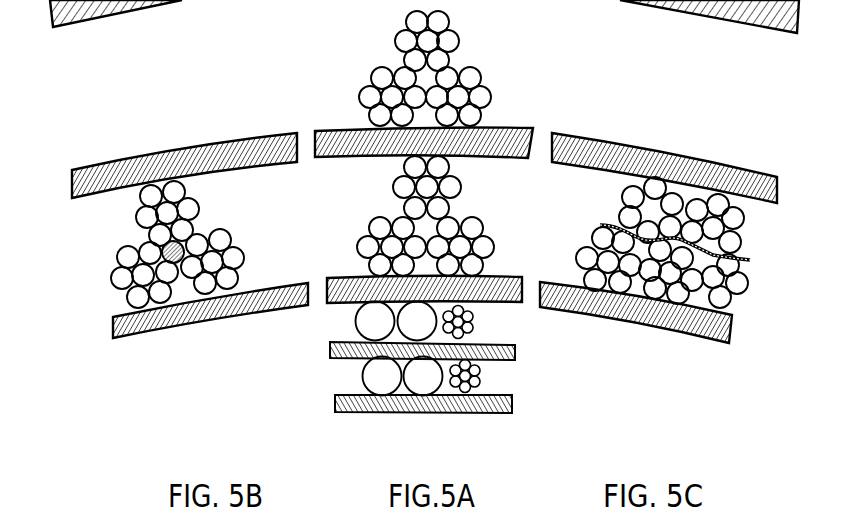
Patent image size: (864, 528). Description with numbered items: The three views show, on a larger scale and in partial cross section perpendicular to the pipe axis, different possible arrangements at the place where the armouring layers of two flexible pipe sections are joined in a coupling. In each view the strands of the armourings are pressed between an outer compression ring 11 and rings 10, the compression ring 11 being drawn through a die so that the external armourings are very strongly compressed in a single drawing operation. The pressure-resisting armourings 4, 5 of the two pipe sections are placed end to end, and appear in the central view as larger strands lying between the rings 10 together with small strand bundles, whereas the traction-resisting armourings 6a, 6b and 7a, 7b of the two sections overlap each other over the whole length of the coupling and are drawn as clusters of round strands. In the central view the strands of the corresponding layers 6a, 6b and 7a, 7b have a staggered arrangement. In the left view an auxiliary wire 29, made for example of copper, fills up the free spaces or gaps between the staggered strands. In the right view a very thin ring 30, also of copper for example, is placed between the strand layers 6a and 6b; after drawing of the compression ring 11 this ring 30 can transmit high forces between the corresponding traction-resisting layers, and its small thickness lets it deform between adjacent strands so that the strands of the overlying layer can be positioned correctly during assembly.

In FIG. 5A, the pressure resisting armouring 4 is at (464, 390).
In FIG. 5A, the pressure resisting armouring 5 is at (463, 330).
In FIG. 5B, the traction resisting armouring 6a is at (135, 293).
In FIG. 5A, the traction resisting armouring 6a is at (483, 247).
In FIG. 5C, the traction resisting armouring 6a is at (588, 262).
In FIG. 5B, the traction resisting armouring 6b is at (141, 216).
In FIG. 5A, the traction resisting armouring 6b is at (452, 187).
In FIG. 5C, the traction resisting armouring 6b is at (646, 199).
In FIG. 5A, the traction resisting armouring 7a is at (480, 97).
In FIG. 5A, the traction resisting armouring 7b is at (450, 41).
In FIG. 5B, the ring 10 is at (87, 178).
In FIG. 5A, the ring 10 is at (533, 130).
In FIG. 5C, the ring 10 is at (583, 147).
In FIG. 5B, the compression ring 11 is at (198, 0).
In FIG. 5A, the compression ring 11 is at (532, 0).
In FIG. 5C, the compression ring 11 is at (715, 15).
In FIG. 5B, the auxiliary wire 29 is at (175, 255).
In FIG. 5C, the thin ring 30 is at (745, 256).